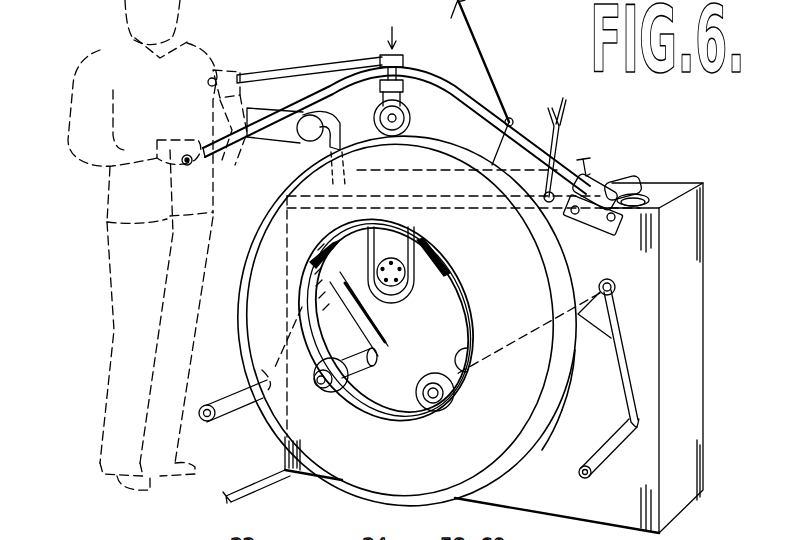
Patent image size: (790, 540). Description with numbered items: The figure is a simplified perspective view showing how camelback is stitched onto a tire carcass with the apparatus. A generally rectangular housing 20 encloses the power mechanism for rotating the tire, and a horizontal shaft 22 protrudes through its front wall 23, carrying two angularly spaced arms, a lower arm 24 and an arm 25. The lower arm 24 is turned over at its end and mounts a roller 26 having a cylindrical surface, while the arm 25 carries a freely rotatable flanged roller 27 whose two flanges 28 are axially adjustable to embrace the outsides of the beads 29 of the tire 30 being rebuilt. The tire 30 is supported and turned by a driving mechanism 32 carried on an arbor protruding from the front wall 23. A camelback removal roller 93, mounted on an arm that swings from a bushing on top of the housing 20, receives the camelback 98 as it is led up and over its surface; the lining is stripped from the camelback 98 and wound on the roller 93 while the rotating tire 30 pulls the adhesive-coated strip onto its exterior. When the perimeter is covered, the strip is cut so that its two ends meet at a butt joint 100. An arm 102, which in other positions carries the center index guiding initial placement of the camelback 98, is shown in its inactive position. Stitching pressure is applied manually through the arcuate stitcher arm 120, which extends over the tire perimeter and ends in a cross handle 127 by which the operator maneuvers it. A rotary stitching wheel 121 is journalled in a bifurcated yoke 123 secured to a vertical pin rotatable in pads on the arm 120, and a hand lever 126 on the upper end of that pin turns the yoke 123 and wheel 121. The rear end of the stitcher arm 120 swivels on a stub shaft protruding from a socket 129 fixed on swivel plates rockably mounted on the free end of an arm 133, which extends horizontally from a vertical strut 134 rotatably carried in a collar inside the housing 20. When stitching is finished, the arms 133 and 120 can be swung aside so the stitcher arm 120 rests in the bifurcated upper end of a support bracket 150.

The housing 20 is at (679, 311).
The horizontal shaft 22 is at (617, 290).
The front wall 23 is at (580, 503).
The lower arm 24 is at (640, 393).
The arm 25 is at (372, 327).
The roller 26 is at (226, 418).
The flanged roller 27 is at (433, 364).
The flange 28 is at (383, 357).
The bead 29 is at (461, 292).
The tire 30 is at (364, 462).
The driving mechanism 32 is at (440, 272).
The camelback removal roller 93 is at (320, 114).
The camelback 98 is at (563, 380).
The butt joint 100 is at (555, 431).
The arm 102 is at (497, 71).
The stitcher arm 120 is at (467, 93).
The stitching wheel 121 is at (410, 120).
The yoke 123 is at (402, 96).
The hand lever 126 is at (283, 68).
The cross handle 127 is at (190, 164).
The socket 129 is at (612, 190).
The arm 133 is at (628, 183).
The vertical strut 134 is at (658, 182).
The support bracket 150 is at (584, 150).